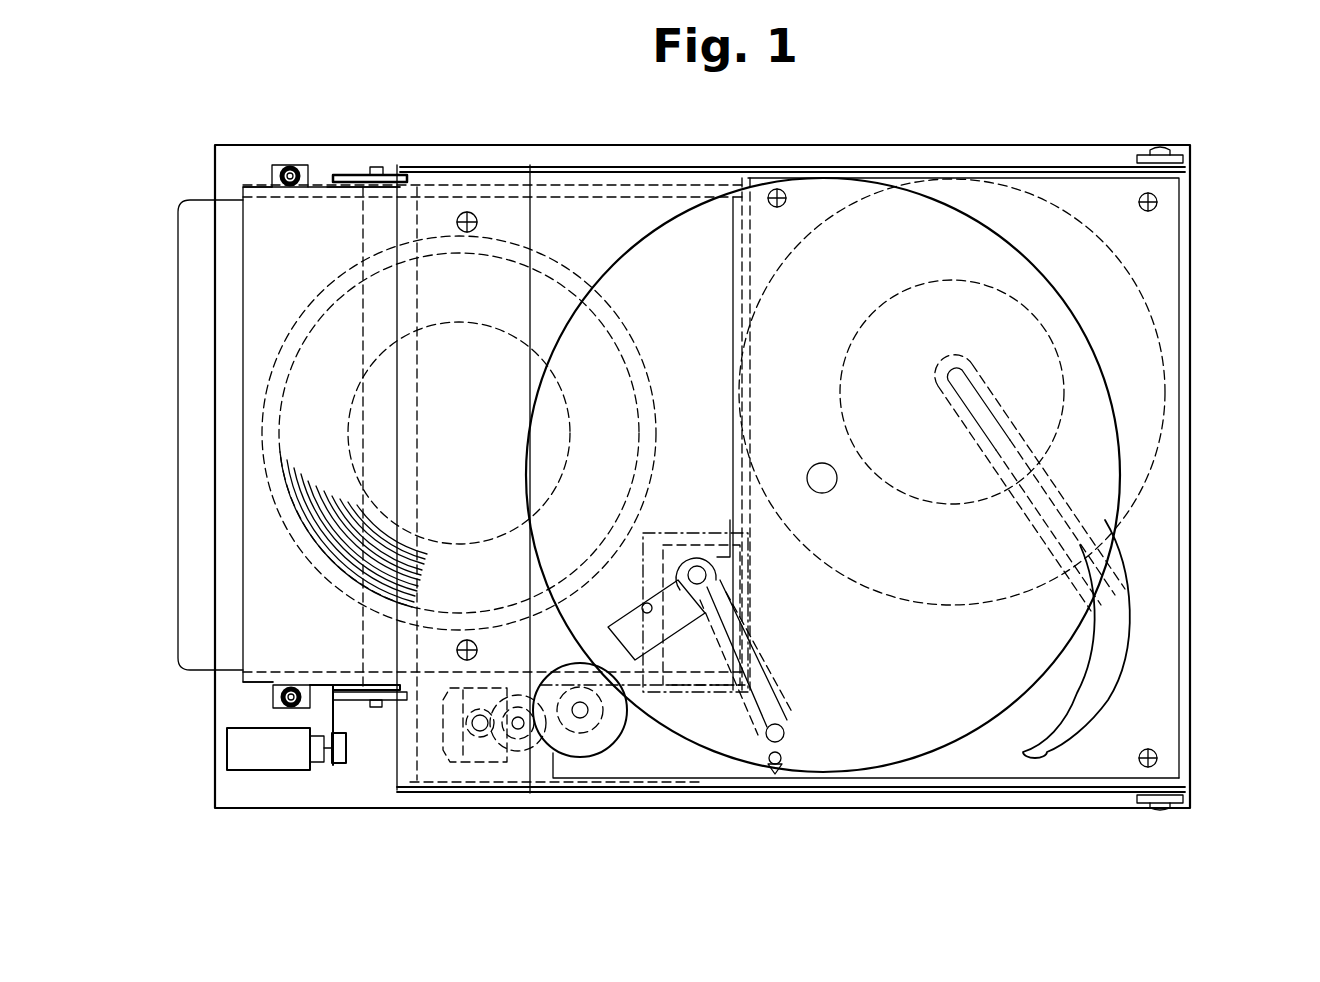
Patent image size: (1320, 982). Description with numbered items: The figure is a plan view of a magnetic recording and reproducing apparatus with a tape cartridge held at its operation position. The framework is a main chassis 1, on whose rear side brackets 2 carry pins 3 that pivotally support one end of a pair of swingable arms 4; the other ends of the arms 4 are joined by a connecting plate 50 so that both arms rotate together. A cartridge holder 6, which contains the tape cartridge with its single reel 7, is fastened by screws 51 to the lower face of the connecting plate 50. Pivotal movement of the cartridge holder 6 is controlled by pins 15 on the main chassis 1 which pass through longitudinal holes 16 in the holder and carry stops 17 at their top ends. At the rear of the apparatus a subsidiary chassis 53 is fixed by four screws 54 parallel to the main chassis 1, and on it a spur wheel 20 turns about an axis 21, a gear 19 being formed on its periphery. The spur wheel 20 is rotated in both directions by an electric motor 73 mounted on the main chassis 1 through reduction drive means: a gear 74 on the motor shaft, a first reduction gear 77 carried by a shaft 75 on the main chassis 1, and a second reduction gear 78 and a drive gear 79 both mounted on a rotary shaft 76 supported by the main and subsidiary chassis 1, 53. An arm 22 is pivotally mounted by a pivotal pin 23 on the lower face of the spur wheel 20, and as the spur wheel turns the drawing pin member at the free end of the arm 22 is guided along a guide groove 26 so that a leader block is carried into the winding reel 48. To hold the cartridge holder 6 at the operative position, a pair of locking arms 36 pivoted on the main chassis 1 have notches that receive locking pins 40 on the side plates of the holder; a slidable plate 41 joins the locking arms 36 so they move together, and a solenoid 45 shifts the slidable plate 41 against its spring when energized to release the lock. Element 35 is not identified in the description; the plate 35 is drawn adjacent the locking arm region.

The main chassis 1 is at (740, 165).
The bracket 2 is at (1185, 160).
The pin 3 is at (1160, 150).
The swingable arm 4 is at (1045, 168).
The cartridge holder 6 is at (327, 187).
The single reel 7 is at (275, 355).
The pin 15 is at (285, 176).
The longitudinal hole 16 is at (282, 170).
The stop 17 is at (262, 187).
The gear 19 is at (675, 727).
The spur wheel 20 is at (832, 200).
The axis 21 is at (836, 488).
The arm 22 is at (740, 692).
The pivotal pin 23 is at (778, 742).
The guide groove 26 is at (1030, 758).
The mounting plate 35 is at (355, 700).
The locking arm 36 is at (355, 175).
The locking pin 40 is at (376, 168).
The slidable plate 41 is at (333, 765).
The solenoid 45 is at (262, 770).
The winding reel 48 is at (1165, 340).
The connecting plate 50 is at (505, 210).
The screw 51 is at (474, 212).
The subsidiary chassis 53 is at (1155, 260).
The screw 54 is at (782, 195).
The electric motor 73 is at (470, 762).
The gear 74 is at (480, 737).
The shaft 75 is at (518, 751).
The rotary shaft 76 is at (580, 718).
The first reduction gear 77 is at (525, 740).
The second reduction gear 78 is at (600, 752).
The drive gear 79 is at (605, 740).